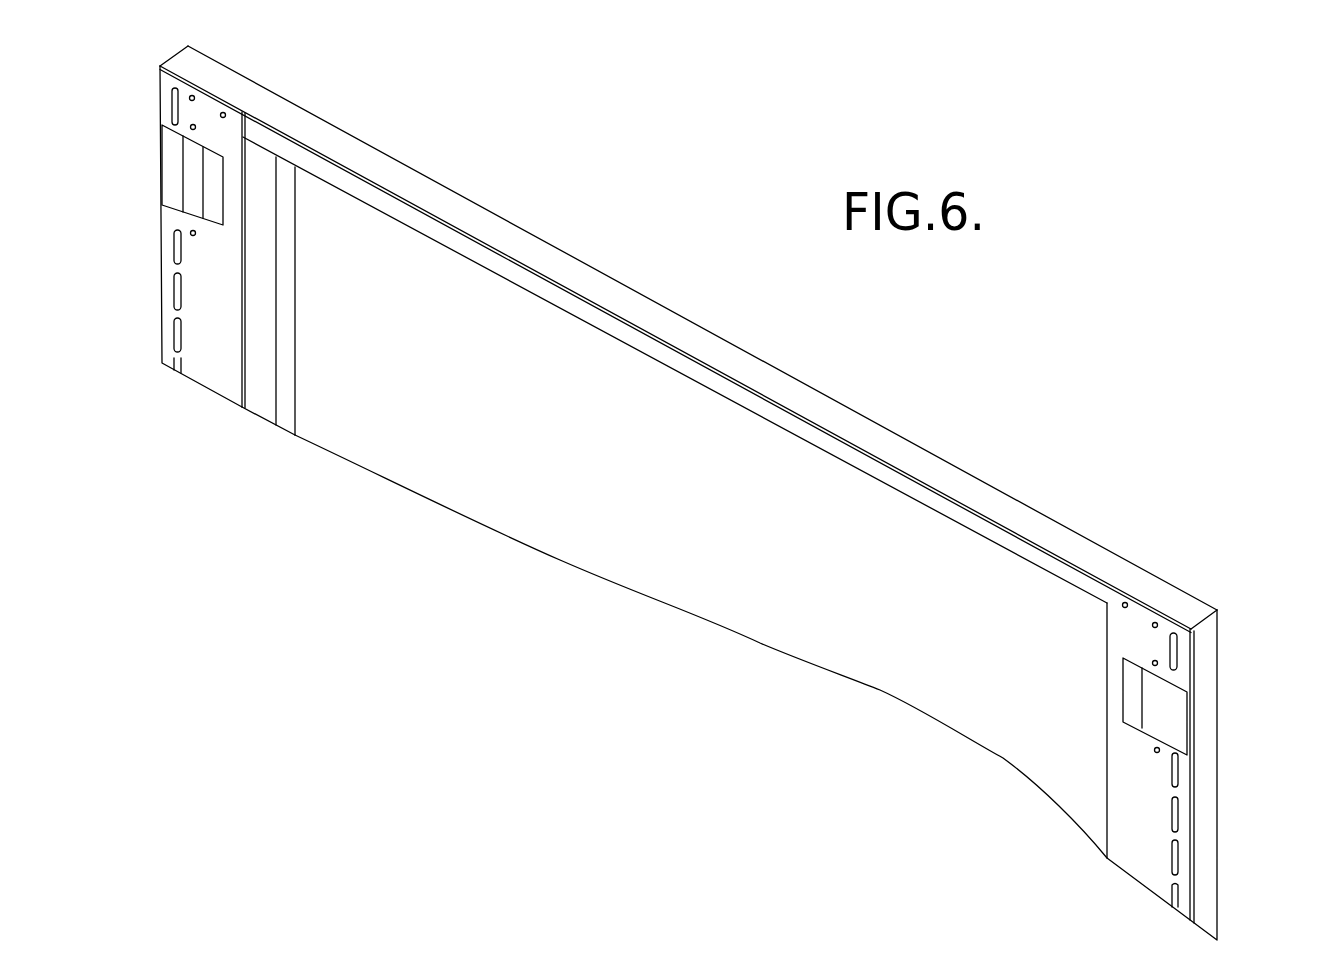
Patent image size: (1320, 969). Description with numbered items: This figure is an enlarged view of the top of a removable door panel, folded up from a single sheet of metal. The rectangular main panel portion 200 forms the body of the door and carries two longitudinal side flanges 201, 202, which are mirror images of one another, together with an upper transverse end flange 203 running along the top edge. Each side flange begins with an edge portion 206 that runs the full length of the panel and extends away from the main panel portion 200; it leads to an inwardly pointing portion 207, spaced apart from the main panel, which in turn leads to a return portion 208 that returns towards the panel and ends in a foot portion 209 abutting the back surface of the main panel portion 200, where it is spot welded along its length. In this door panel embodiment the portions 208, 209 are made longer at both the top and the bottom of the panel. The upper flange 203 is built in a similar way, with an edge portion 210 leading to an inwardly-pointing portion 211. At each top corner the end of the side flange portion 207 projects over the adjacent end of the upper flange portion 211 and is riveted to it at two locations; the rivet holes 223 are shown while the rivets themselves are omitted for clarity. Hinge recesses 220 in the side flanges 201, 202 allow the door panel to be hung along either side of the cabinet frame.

The main panel portion 200 is at (660, 575).
The longitudinal side flange 201 is at (163, 272).
The longitudinal side flange 202 is at (1207, 812).
The upper transverse end flange 203 is at (830, 418).
The edge portion 206 is at (1207, 875).
The inwardly pointing portion 207 is at (228, 378).
The return portion 208 is at (262, 400).
The foot portion 209 is at (288, 383).
The edge portion 210 is at (965, 488).
The inwardly-pointing portion 211 is at (1015, 548).
The hinge recess 220 is at (175, 175).
The rivet holes 223 is at (193, 97).